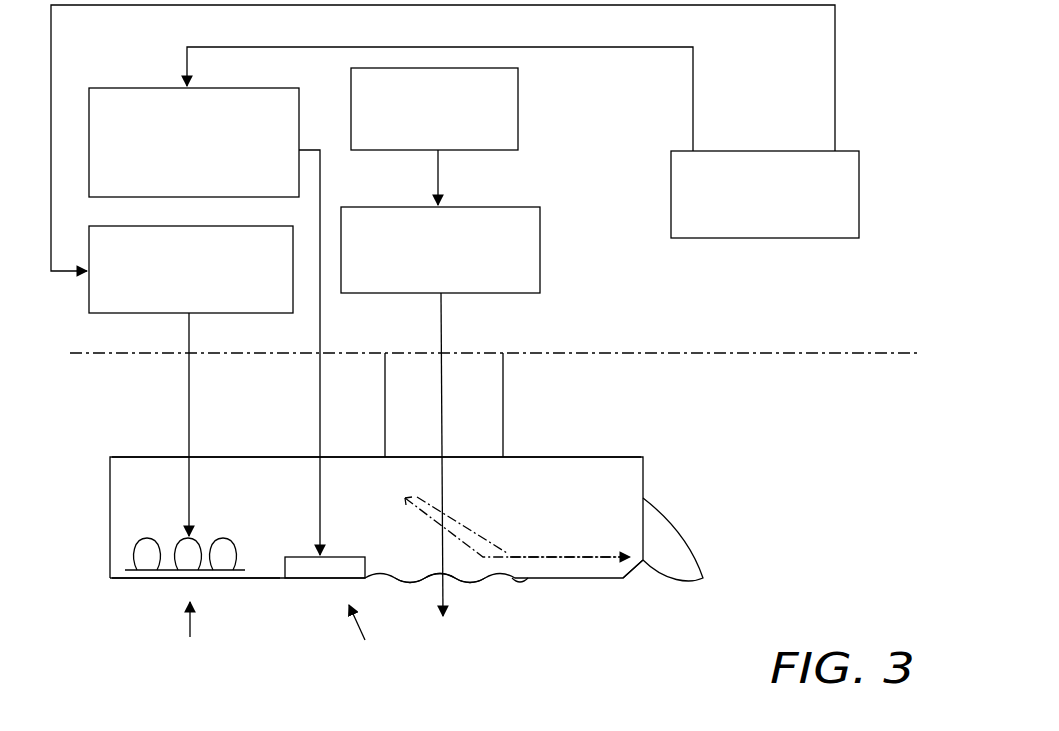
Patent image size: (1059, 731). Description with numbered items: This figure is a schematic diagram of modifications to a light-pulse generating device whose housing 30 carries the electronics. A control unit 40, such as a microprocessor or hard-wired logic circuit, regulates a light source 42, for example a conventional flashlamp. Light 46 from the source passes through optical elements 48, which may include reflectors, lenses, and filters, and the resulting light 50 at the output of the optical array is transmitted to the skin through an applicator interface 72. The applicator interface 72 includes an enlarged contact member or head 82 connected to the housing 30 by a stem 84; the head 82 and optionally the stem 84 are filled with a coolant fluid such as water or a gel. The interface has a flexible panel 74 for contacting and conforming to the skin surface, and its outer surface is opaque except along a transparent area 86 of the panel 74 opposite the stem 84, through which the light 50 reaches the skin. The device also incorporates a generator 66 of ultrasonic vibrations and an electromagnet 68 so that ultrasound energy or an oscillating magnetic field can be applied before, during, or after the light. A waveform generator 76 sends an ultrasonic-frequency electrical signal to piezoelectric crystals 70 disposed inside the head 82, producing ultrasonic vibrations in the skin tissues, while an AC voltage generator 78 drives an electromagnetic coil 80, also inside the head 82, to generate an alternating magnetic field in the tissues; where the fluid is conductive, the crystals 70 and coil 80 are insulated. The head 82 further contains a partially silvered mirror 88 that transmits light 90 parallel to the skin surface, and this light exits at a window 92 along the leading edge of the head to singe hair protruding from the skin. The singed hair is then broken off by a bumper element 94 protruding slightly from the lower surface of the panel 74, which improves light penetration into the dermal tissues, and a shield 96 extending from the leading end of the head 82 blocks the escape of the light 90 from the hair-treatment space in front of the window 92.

The housing 30 is at (740, 355).
The control unit 40 is at (860, 170).
The light source 42 is at (518, 88).
The light 46 is at (438, 171).
The optical elements 48 is at (540, 233).
The light 50 is at (442, 315).
The generator of ultrasonic vibrations 66 is at (369, 645).
The electromagnet 68 is at (194, 643).
The piezoelectric crystals 70 is at (308, 578).
The applicator interface 72 is at (607, 433).
The flexible panel 74 is at (147, 580).
The waveform generator 76 is at (111, 88).
The AC voltage generator 78 is at (88, 295).
The electromagnetic coil 80 is at (155, 540).
The head 82 is at (262, 455).
The stem 84 is at (503, 396).
The transparent area 86 is at (467, 577).
The partially silvered mirror 88 is at (423, 513).
The light 90 is at (587, 557).
The window 92 is at (633, 572).
The bumper element 94 is at (563, 580).
The shield 96 is at (687, 540).